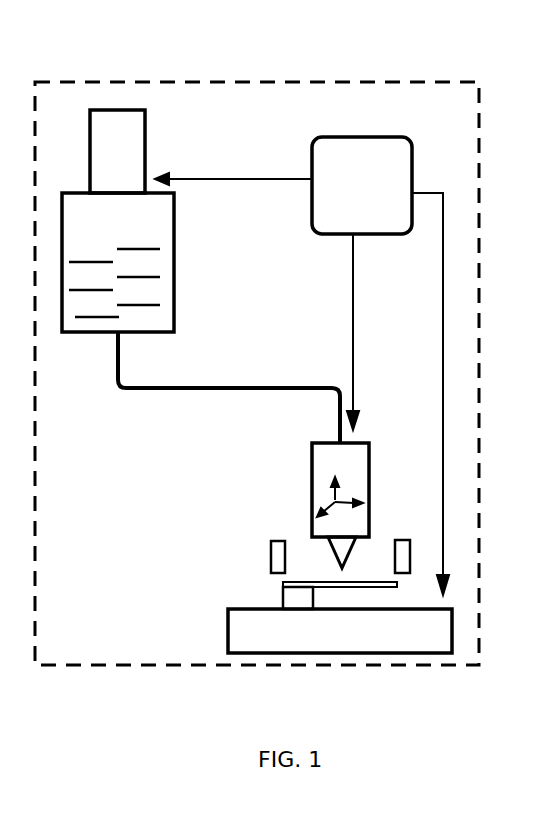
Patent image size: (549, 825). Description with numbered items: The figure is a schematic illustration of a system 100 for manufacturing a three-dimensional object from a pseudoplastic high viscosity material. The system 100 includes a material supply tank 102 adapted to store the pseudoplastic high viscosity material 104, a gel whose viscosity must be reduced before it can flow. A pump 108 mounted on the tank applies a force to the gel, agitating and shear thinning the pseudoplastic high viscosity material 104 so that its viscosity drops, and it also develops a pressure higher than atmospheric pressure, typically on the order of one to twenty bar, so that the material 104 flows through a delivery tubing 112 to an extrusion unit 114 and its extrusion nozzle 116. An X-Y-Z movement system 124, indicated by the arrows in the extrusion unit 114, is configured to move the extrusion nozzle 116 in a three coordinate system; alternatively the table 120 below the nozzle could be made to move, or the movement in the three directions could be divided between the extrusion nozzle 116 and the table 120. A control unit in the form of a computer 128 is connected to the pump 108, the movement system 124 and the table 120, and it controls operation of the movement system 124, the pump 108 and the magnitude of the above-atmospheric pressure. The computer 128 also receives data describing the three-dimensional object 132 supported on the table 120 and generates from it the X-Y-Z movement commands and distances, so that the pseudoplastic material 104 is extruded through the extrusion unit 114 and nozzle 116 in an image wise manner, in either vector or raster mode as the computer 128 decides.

The system 100 is at (277, 82).
The material supply tank 102 is at (175, 282).
The pseudoplastic high viscosity material 104 is at (138, 318).
The pump 108 is at (147, 163).
The delivery tubing 112 is at (220, 392).
The extrusion unit 114 is at (347, 465).
The extrusion nozzle 116 is at (363, 562).
The table 120 is at (252, 637).
The X-Y-Z movement system 124 is at (318, 511).
The computer 128 is at (383, 197).
The three-dimensional object 132 is at (283, 587).